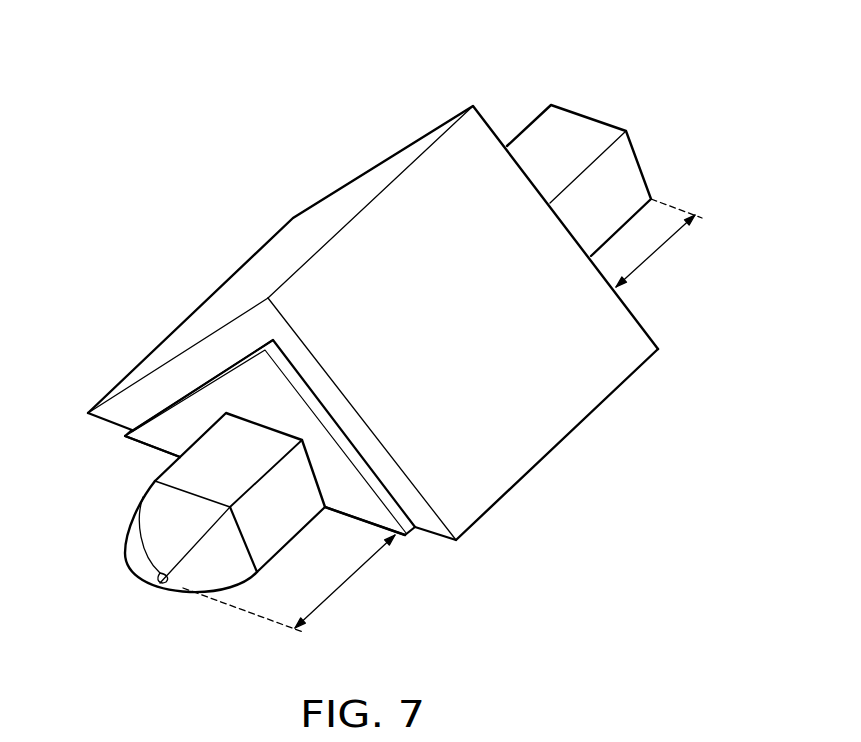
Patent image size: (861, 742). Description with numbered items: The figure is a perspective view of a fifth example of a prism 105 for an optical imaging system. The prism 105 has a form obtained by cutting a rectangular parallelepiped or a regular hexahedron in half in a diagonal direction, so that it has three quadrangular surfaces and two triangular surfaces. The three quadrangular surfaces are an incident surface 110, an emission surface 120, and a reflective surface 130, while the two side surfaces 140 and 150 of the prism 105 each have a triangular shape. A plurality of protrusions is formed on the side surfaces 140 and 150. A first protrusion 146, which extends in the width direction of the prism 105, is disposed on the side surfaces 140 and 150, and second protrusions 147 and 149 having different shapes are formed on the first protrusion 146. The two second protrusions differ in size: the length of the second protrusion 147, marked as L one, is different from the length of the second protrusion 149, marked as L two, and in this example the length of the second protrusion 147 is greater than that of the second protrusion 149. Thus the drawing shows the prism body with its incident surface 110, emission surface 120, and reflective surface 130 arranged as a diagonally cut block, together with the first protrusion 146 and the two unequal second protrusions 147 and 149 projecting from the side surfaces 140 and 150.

The prism 105 is at (683, 193).
The incident surface 110 is at (263, 270).
The emission surface 120 is at (567, 363).
The reflective surface 130 is at (520, 427).
The side surface 140 is at (122, 408).
The first protrusion 146 is at (157, 440).
The second protrusion 147 is at (133, 537).
The second protrusion 149 is at (578, 132).
The side surface 150 is at (468, 152).